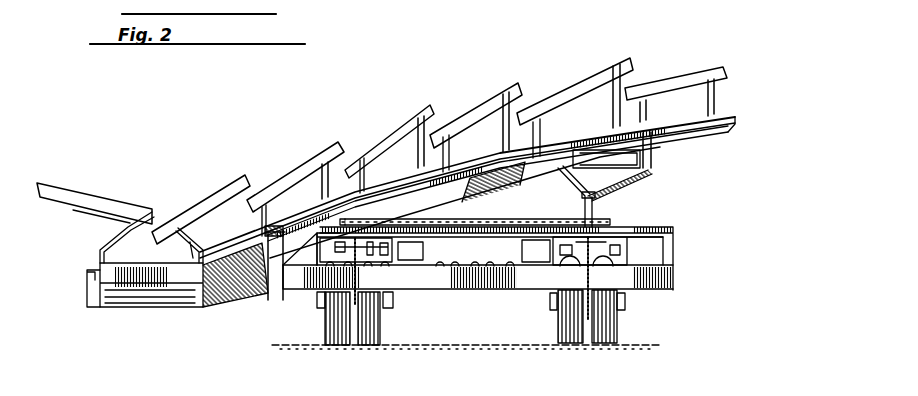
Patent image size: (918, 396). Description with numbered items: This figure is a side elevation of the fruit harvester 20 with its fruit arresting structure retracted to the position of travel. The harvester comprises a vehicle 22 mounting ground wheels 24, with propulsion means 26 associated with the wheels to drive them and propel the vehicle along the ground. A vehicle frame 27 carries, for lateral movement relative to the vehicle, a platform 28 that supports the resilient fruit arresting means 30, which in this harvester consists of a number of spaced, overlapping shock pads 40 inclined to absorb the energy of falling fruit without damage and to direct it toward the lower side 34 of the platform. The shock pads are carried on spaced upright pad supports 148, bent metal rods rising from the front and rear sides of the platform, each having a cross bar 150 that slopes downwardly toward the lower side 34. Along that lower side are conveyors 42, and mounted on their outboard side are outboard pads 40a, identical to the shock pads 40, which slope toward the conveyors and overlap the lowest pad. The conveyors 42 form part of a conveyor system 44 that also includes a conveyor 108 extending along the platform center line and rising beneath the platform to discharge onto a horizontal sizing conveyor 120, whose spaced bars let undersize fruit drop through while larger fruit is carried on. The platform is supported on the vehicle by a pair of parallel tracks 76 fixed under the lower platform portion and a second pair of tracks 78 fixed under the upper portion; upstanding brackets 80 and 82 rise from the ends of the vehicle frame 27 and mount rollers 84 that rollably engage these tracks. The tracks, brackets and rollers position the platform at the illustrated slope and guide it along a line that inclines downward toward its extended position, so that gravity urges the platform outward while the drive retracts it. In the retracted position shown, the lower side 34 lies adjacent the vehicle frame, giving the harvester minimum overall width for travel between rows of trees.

The fruit harvester 20 is at (756, 66).
The vehicle 22 is at (697, 252).
The ground wheels 24 is at (363, 347).
The propulsion means 26 is at (422, 265).
The vehicle frame 27 is at (677, 286).
The platform 28 is at (729, 120).
The resilient fruit arresting means 30 is at (645, 65).
The lower side of platform 34 is at (199, 237).
The shock pads 40 is at (372, 137).
The outboard pads 40a is at (128, 204).
The conveyors 42 is at (97, 265).
The conveyor system 44 is at (665, 163).
The tracks 76 is at (250, 288).
The second pair of tracks 78 is at (637, 178).
The upstanding bracket 80 is at (273, 277).
The upstanding bracket 82 is at (590, 218).
The rollers 84 is at (267, 221).
The conveyor 108 is at (470, 203).
The sizing conveyor 120 is at (640, 171).
The pad supports 148 is at (322, 172).
The cross bar 150 is at (401, 128).